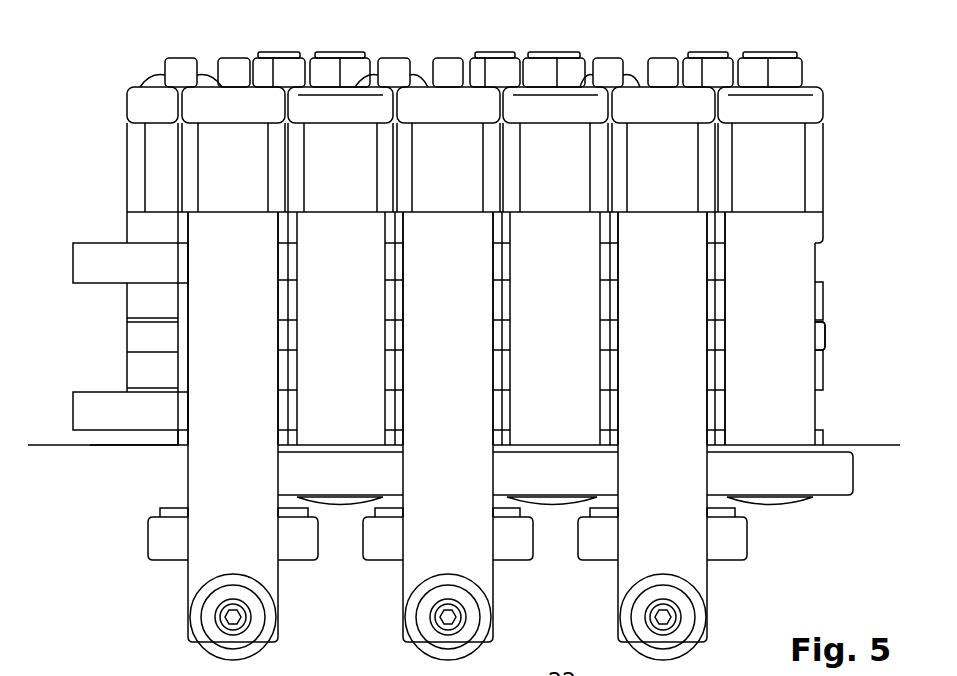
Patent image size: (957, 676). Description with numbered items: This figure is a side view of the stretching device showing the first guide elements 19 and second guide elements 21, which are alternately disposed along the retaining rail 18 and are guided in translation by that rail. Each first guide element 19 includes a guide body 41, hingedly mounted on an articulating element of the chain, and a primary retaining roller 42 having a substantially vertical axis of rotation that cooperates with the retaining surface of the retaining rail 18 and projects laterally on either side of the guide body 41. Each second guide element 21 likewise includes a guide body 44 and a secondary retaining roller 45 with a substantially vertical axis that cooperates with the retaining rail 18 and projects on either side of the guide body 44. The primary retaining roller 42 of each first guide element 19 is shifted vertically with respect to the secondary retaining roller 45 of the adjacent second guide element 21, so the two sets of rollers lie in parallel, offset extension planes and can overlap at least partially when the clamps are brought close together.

The retaining rail 18 is at (72, 467).
The first guide element 19 is at (857, 270).
The second guide element 21 is at (672, 248).
The guide body 41 is at (793, 335).
The primary retaining roller 42 is at (300, 473).
The guide body 44 is at (688, 470).
The secondary retaining roller 45 is at (377, 538).